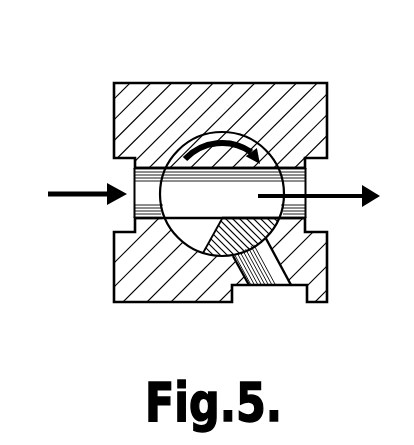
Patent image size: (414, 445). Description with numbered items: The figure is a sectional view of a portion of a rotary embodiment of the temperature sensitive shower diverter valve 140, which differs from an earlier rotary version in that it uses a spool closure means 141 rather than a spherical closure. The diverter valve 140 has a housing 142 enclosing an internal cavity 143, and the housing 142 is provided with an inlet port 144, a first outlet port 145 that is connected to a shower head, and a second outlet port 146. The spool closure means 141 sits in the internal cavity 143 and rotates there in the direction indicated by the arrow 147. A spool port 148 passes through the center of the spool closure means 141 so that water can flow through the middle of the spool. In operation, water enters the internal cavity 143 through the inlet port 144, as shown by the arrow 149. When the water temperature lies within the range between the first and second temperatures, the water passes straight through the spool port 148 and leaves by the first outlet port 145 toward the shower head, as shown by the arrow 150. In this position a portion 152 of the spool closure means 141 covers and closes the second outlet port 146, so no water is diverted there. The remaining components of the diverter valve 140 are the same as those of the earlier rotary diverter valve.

The temperature sensitive shower diverter valve 140 is at (100, 76).
The spool closure means 141 is at (190, 140).
The housing 142 is at (142, 287).
The internal cavity 143 is at (182, 218).
The inlet port 144 is at (128, 181).
The first outlet port 145 is at (283, 207).
The second outlet port 146 is at (284, 262).
The arrow 147 is at (220, 135).
The spool port 148 is at (278, 172).
The arrow 149 is at (70, 190).
The arrow 150 is at (342, 189).
The portion of the spool closure means 152 is at (248, 227).